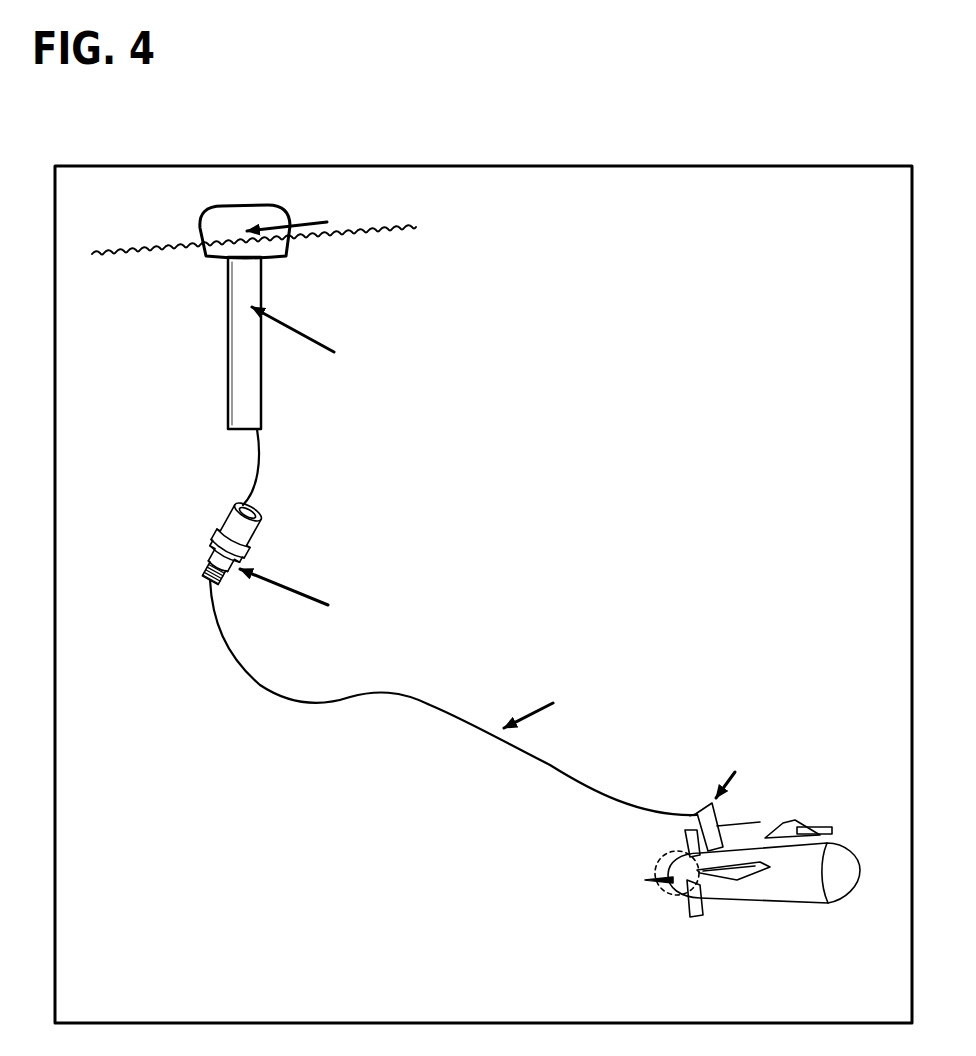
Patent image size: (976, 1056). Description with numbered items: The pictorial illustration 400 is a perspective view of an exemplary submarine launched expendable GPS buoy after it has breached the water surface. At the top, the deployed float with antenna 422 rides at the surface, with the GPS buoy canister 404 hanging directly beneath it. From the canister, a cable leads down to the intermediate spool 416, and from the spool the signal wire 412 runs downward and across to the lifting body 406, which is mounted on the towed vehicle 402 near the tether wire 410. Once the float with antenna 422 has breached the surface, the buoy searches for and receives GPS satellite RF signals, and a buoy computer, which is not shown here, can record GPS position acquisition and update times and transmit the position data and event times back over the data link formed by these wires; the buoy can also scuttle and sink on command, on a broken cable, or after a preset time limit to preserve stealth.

The pictorial illustration 400 is at (858, 97).
The deployed float with antenna 422 is at (265, 243).
The GPS buoy canister 404 is at (248, 370).
The intermediate spool 416 is at (243, 527).
The signal wire 412 is at (550, 762).
The lifting body 406 is at (697, 812).
The tether wire 410 is at (717, 823).
The underwater vehicle 402 is at (838, 862).